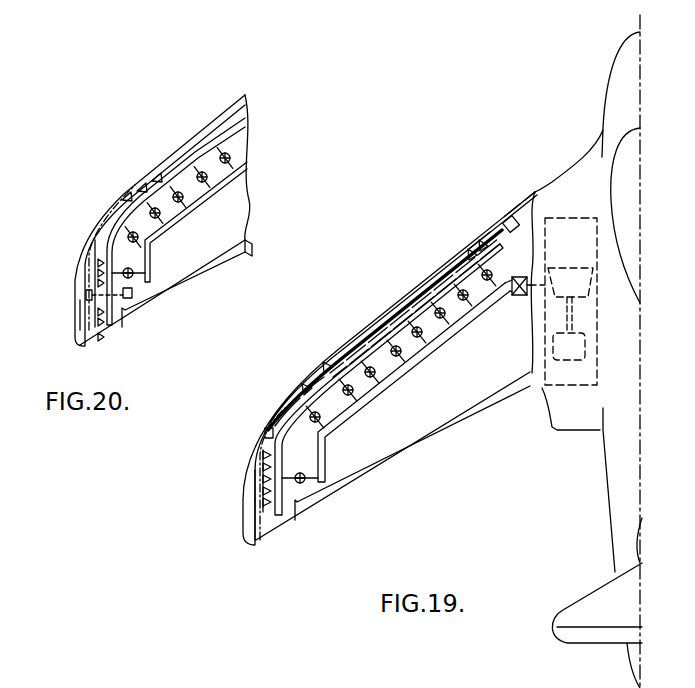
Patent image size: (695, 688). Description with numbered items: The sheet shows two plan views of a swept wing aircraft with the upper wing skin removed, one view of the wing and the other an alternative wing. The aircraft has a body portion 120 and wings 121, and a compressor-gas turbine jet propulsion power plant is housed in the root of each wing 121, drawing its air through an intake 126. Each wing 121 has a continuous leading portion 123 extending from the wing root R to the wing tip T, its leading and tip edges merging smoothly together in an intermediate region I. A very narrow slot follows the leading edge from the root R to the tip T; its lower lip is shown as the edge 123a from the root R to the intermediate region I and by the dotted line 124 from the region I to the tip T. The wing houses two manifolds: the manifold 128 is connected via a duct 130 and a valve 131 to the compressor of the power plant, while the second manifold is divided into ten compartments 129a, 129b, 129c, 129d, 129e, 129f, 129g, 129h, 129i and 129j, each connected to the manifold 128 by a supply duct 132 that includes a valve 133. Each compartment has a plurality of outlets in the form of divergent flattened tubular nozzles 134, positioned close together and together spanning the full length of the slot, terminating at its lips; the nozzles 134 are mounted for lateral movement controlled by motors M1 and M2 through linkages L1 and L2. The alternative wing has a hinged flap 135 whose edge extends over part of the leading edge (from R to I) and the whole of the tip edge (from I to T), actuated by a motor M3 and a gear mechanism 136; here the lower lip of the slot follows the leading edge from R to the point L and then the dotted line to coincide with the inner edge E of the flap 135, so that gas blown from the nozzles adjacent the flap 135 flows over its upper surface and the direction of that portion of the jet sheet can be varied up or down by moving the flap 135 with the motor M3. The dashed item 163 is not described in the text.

In FIG. 19, the body portion 120 is at (617, 513).
In FIG. 19, the wing 121 is at (470, 393).
In FIG. 19, the continuous leading portion 123 is at (433, 272).
In FIG. 19, the edge 123a is at (513, 210).
In FIG. 19, the dotted line 124 is at (255, 482).
In FIG. 19, the intake 126 is at (568, 168).
In FIG. 19, the manifold 128 is at (447, 334).
In FIG. 19, the compartment of manifold 129a is at (472, 252).
In FIG. 19, the compartment of manifold 129b is at (433, 276).
In FIG. 19, the compartment of manifold 129c is at (413, 302).
In FIG. 19, the compartment of manifold 129d is at (390, 312).
In FIG. 19, the compartment of manifold 129e is at (373, 333).
In FIG. 19, the compartment of manifold 129f is at (345, 345).
In FIG. 19, the compartment of manifold 129g is at (325, 364).
In FIG. 19, the compartment of manifold 129h is at (302, 393).
In FIG. 19, the compartment of manifold 129i is at (268, 428).
In FIG. 19, the compartment of manifold 129j is at (270, 506).
In FIG. 19, the duct 130 is at (520, 296).
In FIG. 19, the valve 131 is at (513, 296).
In FIG. 19, the supply duct 132 is at (355, 398).
In FIG. 19, the valve 133 is at (392, 368).
In FIG. 19, the divergent flattened tubular nozzle 134 is at (285, 378).
In FIG. 20, the hinged flap 135 is at (75, 322).
In FIG. 20, the gear mechanism 136 is at (86, 295).
In FIG. 19, the fuselage equipment (phantom) 163 is at (592, 312).
In FIG. 20, the point L is at (122, 198).
In FIG. 19, the linkage L1 is at (487, 230).
In FIG. 19, the linkage L2 is at (266, 463).
In FIG. 20, the intermediate region I is at (80, 266).
In FIG. 19, the intermediate region I is at (255, 456).
In FIG. 20, the wing tip T is at (80, 342).
In FIG. 19, the wing tip T is at (250, 541).
In FIG. 20, the inner edge of flap E is at (97, 337).
In FIG. 19, the wing root R is at (532, 190).
In FIG. 19, the motor M1 is at (498, 218).
In FIG. 19, the motor M2 is at (265, 433).
In FIG. 20, the motor M3 is at (134, 298).